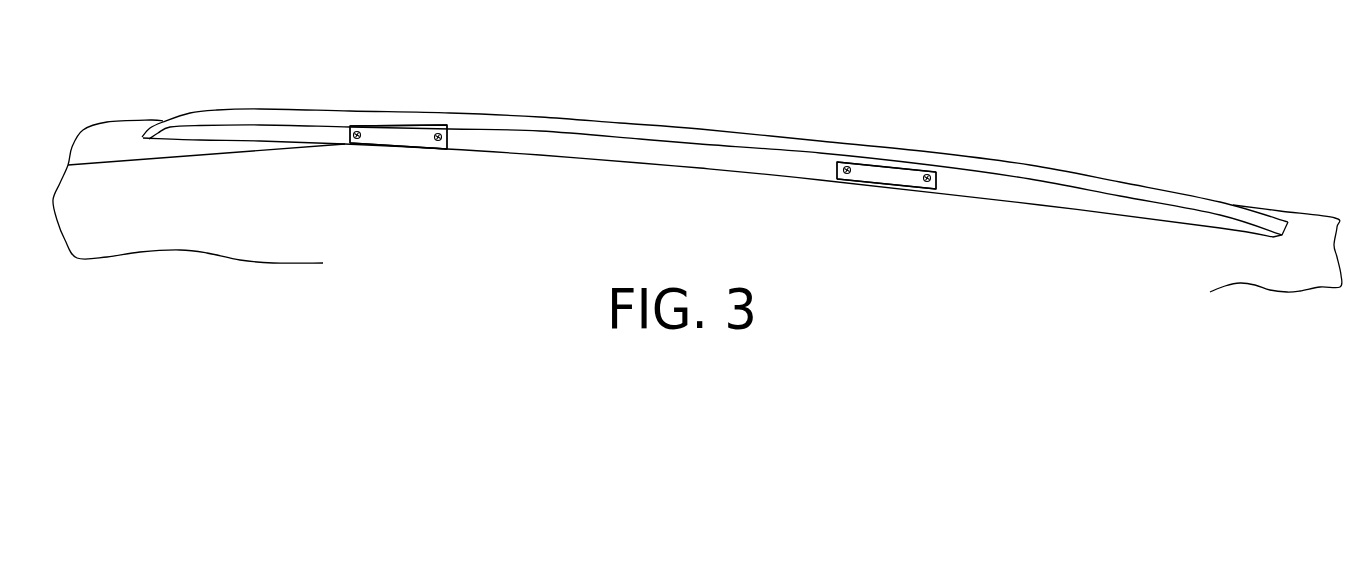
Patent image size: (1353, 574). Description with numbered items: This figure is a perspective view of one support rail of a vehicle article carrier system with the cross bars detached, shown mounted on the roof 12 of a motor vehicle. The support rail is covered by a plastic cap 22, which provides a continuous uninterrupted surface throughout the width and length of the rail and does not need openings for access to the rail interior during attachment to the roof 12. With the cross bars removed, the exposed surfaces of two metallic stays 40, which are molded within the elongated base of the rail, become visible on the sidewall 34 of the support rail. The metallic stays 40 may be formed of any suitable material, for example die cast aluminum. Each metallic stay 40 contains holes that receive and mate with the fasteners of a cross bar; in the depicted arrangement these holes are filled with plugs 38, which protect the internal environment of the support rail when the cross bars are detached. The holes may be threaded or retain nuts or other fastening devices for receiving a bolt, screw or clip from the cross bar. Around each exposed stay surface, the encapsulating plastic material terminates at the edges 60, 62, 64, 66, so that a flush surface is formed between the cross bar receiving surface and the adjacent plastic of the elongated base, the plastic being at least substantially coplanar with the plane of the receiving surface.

The roof 12 is at (1027, 163).
The plastic cap 22 is at (695, 127).
The sidewall 34 is at (612, 150).
The plugs 38 is at (358, 132).
The metallic stays 40 is at (373, 138).
The edge 60 is at (410, 124).
The edge 62 is at (392, 150).
The edge 64 is at (447, 140).
The edge 66 is at (348, 135).